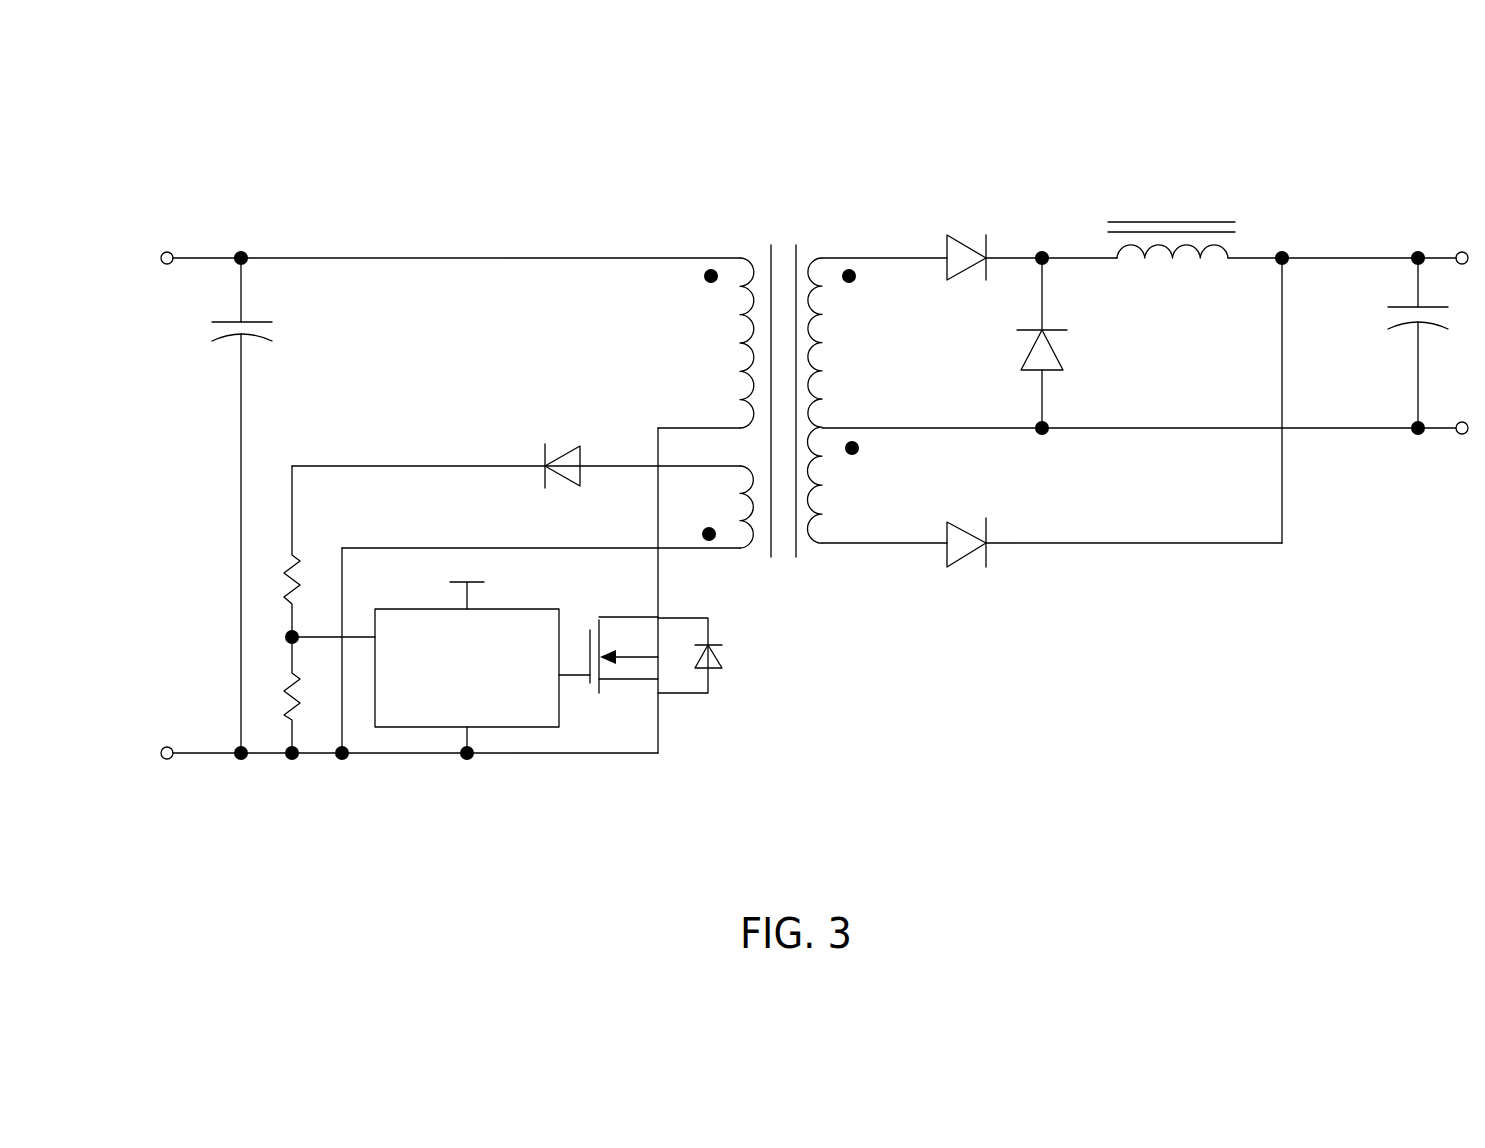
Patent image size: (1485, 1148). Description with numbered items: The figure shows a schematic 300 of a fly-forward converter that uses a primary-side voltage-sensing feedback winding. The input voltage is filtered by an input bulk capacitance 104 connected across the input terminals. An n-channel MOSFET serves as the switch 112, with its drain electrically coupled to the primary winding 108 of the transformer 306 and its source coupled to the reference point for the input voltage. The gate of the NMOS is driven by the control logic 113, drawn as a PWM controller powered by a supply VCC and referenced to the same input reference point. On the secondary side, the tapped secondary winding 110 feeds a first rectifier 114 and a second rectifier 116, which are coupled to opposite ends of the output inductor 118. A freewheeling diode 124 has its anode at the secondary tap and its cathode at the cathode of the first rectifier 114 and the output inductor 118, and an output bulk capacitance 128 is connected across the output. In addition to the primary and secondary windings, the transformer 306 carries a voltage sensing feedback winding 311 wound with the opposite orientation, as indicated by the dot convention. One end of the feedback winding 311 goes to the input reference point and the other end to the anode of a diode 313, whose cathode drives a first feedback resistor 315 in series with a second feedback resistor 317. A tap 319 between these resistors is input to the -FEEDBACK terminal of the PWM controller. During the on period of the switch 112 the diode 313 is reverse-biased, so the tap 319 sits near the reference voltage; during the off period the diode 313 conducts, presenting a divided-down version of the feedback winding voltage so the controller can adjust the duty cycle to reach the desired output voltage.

The schematic 300 is at (392, 134).
The transformer 306 is at (770, 184).
The primary winding 108 is at (740, 240).
The voltage sensing feedback winding 311 is at (740, 548).
The tapped secondary winding 110 is at (815, 548).
The input bulk capacitance 104 is at (258, 320).
The diode 313 is at (578, 447).
The first feedback resistor 315 is at (294, 556).
The second feedback resistor 317 is at (283, 718).
The tap 319 is at (317, 636).
The control logic 113 is at (510, 727).
The switch 112 is at (764, 658).
The first rectifier 114 is at (945, 240).
The second rectifier 116 is at (955, 566).
The freewheeling diode 124 is at (1022, 369).
The output inductor 118 is at (1172, 258).
The output bulk capacitance 128 is at (1395, 307).